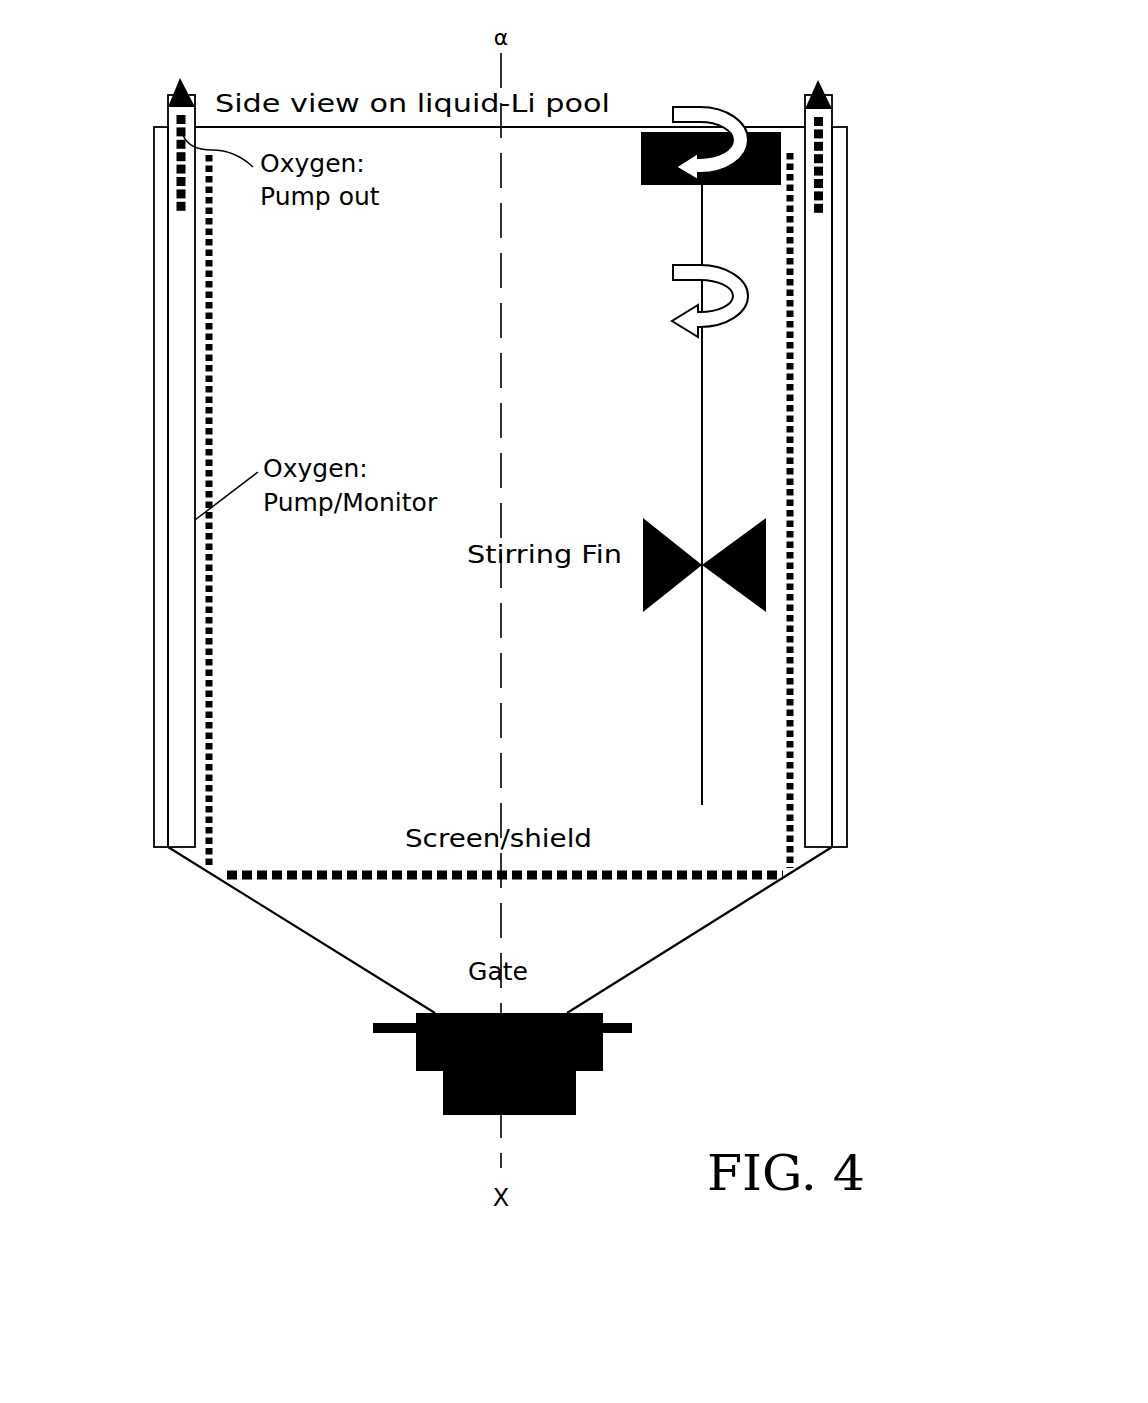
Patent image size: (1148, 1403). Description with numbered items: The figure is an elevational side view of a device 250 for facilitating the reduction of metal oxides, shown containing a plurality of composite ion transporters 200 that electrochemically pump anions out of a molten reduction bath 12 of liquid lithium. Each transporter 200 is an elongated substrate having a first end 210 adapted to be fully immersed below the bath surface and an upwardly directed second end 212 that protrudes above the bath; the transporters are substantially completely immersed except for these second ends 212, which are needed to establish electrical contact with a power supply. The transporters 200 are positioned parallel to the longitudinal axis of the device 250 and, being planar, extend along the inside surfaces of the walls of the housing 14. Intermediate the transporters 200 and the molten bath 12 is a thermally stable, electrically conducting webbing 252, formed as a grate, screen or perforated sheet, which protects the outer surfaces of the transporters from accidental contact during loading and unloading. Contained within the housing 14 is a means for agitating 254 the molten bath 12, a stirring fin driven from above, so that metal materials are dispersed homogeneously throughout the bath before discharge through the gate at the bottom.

The molten reduction bath 12 is at (524, 722).
The housing 14 is at (847, 683).
The ion transporter 200 is at (167, 583).
The first end 210 is at (173, 818).
The second end 212 is at (170, 100).
The device 250 is at (762, 108).
The webbing 252 is at (210, 308).
The means for agitating 254 is at (738, 593).